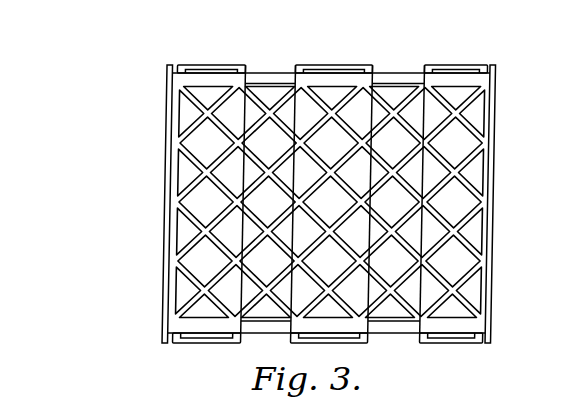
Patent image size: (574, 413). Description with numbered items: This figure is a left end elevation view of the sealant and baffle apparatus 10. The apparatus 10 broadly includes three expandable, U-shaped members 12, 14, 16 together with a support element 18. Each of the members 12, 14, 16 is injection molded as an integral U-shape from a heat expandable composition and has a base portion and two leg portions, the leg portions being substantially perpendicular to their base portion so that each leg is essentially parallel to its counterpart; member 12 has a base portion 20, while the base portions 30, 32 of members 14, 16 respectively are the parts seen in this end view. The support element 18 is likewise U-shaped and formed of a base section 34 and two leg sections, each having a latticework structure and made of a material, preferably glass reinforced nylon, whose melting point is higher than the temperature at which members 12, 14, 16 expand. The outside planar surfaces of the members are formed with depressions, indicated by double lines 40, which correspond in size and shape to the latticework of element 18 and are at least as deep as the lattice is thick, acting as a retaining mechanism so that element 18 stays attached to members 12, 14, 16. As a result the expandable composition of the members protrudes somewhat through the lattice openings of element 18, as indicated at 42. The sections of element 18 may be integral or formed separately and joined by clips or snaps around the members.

The sealant and baffle apparatus 10 is at (82, 136).
The expandable U-shaped member 12 is at (447, 355).
The expandable U-shaped member 14 is at (323, 51).
The expandable U-shaped member 16 is at (208, 355).
The support element 18 is at (260, 63).
The base portion 20 is at (475, 113).
The base portion 30 is at (301, 115).
The base portion 32 is at (185, 290).
The base section 34 is at (393, 81).
The depressions 40 is at (473, 163).
The protruding expandable composition 42 is at (467, 64).